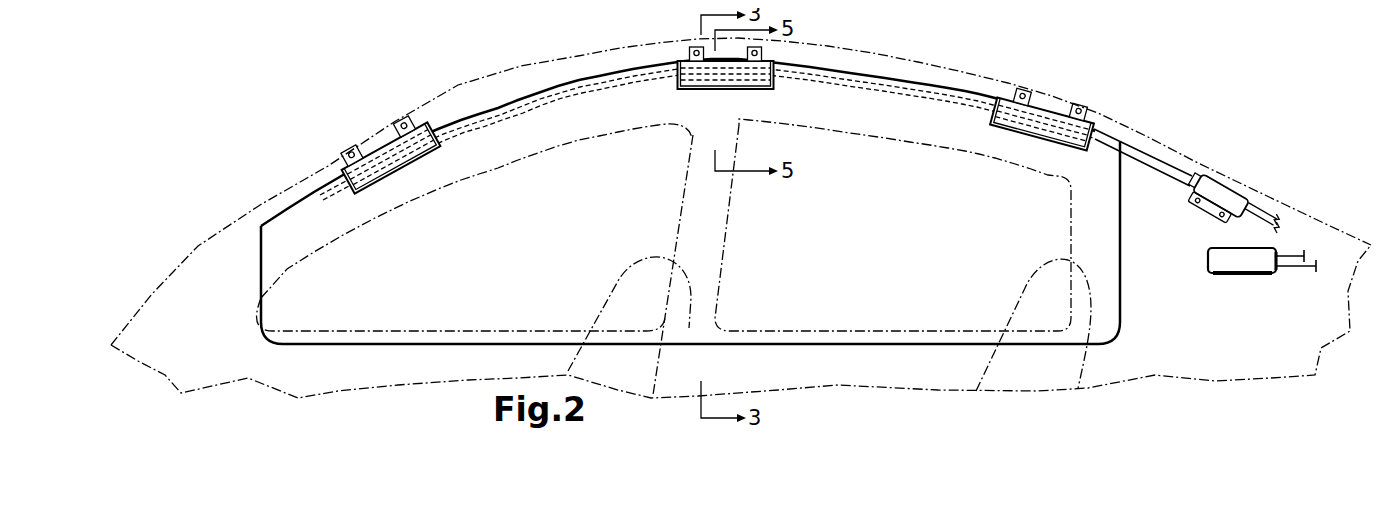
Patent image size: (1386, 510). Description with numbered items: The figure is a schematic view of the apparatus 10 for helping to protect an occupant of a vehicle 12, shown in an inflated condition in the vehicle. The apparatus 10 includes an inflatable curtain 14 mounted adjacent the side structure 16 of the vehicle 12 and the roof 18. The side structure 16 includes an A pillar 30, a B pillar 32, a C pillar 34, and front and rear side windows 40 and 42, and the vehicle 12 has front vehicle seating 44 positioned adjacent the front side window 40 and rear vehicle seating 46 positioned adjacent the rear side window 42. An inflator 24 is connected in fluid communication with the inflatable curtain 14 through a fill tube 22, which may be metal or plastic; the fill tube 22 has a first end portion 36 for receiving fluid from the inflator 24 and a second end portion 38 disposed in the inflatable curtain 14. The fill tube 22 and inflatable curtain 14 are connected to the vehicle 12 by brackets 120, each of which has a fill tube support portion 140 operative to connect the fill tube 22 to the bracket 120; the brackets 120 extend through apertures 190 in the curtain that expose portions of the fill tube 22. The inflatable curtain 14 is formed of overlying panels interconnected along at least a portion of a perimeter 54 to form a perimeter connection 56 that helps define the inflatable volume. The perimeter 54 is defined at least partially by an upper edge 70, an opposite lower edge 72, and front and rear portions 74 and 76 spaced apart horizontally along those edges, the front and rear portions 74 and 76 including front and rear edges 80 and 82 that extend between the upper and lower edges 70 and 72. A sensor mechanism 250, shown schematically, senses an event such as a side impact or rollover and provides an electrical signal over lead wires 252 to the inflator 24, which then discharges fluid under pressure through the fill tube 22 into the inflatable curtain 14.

The apparatus 10 is at (518, 46).
The vehicle 12 is at (357, 49).
The inflatable curtain 14 is at (535, 277).
The side structure 16 is at (697, 320).
The roof 18 is at (497, 73).
The fill tube 22 is at (1127, 147).
The inflator 24 is at (1215, 195).
The A pillar 30 is at (232, 278).
The B pillar 32 is at (705, 233).
The C pillar 34 is at (1167, 280).
The first end portion 36 is at (307, 170).
The second end portion 38 is at (577, 87).
The front side window 40 is at (460, 320).
The rear side window 42 is at (915, 318).
The front vehicle seating 44 is at (620, 283).
The rear vehicle seating 46 is at (1027, 290).
The perimeter 54 is at (353, 347).
The perimeter connection 56 is at (793, 347).
The upper edge 70 is at (660, 66).
The lower edge 72 is at (850, 347).
The front portion 74 is at (295, 303).
The rear portion 76 is at (1097, 258).
The front edge 80 is at (262, 298).
The rear edge 82 is at (1122, 247).
The bracket 120 is at (397, 165).
The fill tube support portion 140 is at (422, 152).
The aperture 190 is at (347, 184).
The sensor mechanism 250 is at (1250, 277).
The lead wires 252 is at (1258, 203).